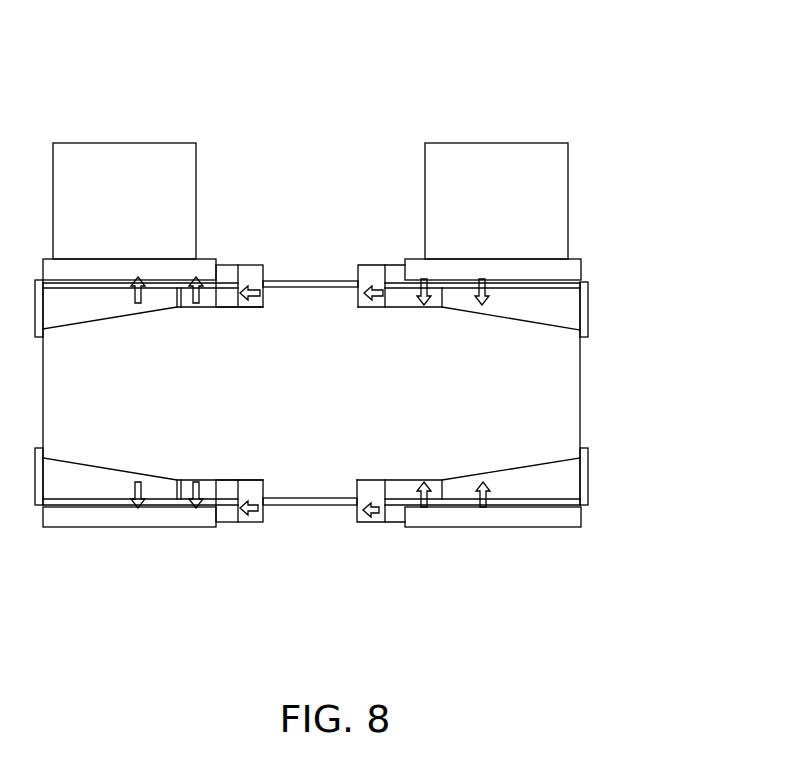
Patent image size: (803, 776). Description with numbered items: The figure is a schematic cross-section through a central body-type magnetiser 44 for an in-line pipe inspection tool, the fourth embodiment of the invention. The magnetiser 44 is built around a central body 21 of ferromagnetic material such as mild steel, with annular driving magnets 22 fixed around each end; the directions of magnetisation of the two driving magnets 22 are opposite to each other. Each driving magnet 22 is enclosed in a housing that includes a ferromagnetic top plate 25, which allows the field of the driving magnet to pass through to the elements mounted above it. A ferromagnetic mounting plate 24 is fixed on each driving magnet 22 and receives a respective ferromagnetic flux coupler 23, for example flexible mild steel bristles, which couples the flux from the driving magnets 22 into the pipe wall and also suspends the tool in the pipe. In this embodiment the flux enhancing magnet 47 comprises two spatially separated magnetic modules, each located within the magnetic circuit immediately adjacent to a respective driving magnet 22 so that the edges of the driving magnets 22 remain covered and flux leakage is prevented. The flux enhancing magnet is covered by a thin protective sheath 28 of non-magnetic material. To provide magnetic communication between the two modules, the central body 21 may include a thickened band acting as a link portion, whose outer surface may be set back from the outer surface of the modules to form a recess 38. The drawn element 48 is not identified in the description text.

The main body 21 is at (565, 364).
The clamping arm 22 is at (572, 486).
The support block 23 is at (552, 191).
The upper plate 24 is at (568, 271).
The lower plate 25 is at (395, 512).
The upper connecting member 28 is at (316, 276).
The lower connecting member 38 is at (294, 514).
The assembly 44 is at (570, 97).
The actuator block 47 is at (257, 302).
The lower connecting portion 48 is at (318, 488).